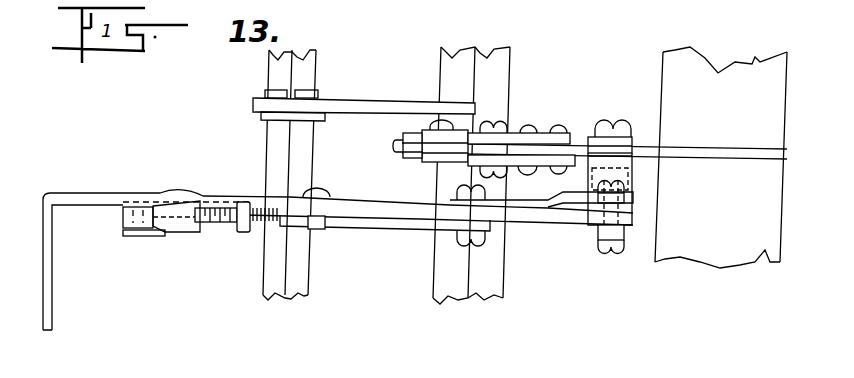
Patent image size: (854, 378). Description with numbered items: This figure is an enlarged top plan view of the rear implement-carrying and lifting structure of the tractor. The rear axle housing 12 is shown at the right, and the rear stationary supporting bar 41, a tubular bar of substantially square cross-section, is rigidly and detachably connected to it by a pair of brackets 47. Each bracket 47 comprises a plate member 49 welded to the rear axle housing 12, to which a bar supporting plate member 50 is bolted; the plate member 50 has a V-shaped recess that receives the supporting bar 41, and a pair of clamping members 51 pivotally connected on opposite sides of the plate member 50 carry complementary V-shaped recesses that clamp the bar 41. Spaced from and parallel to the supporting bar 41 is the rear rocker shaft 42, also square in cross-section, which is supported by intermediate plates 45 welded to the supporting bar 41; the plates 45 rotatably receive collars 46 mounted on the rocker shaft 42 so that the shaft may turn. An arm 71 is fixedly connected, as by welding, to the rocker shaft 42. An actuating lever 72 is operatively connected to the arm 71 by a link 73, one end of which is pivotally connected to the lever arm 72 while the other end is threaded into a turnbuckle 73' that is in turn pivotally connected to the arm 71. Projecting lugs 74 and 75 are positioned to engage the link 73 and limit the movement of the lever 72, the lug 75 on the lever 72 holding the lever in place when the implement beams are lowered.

The rear axle housing 12 is at (736, 216).
The rear stationary supporting bar 41 is at (512, 70).
The rear rocker shaft 42 is at (316, 67).
The intermediate plates 45 is at (253, 105).
The collars 46 is at (261, 115).
The brackets 47 is at (568, 118).
The plate member 49 is at (706, 142).
The bar supporting plate member 50 is at (578, 142).
The clamping members 51 is at (458, 128).
The arm 71 is at (125, 210).
The actuating lever 72 is at (80, 193).
The link 73 is at (416, 231).
The turnbuckle 73' is at (232, 243).
The projecting lug 74 is at (612, 251).
The projecting lug 75 is at (318, 230).